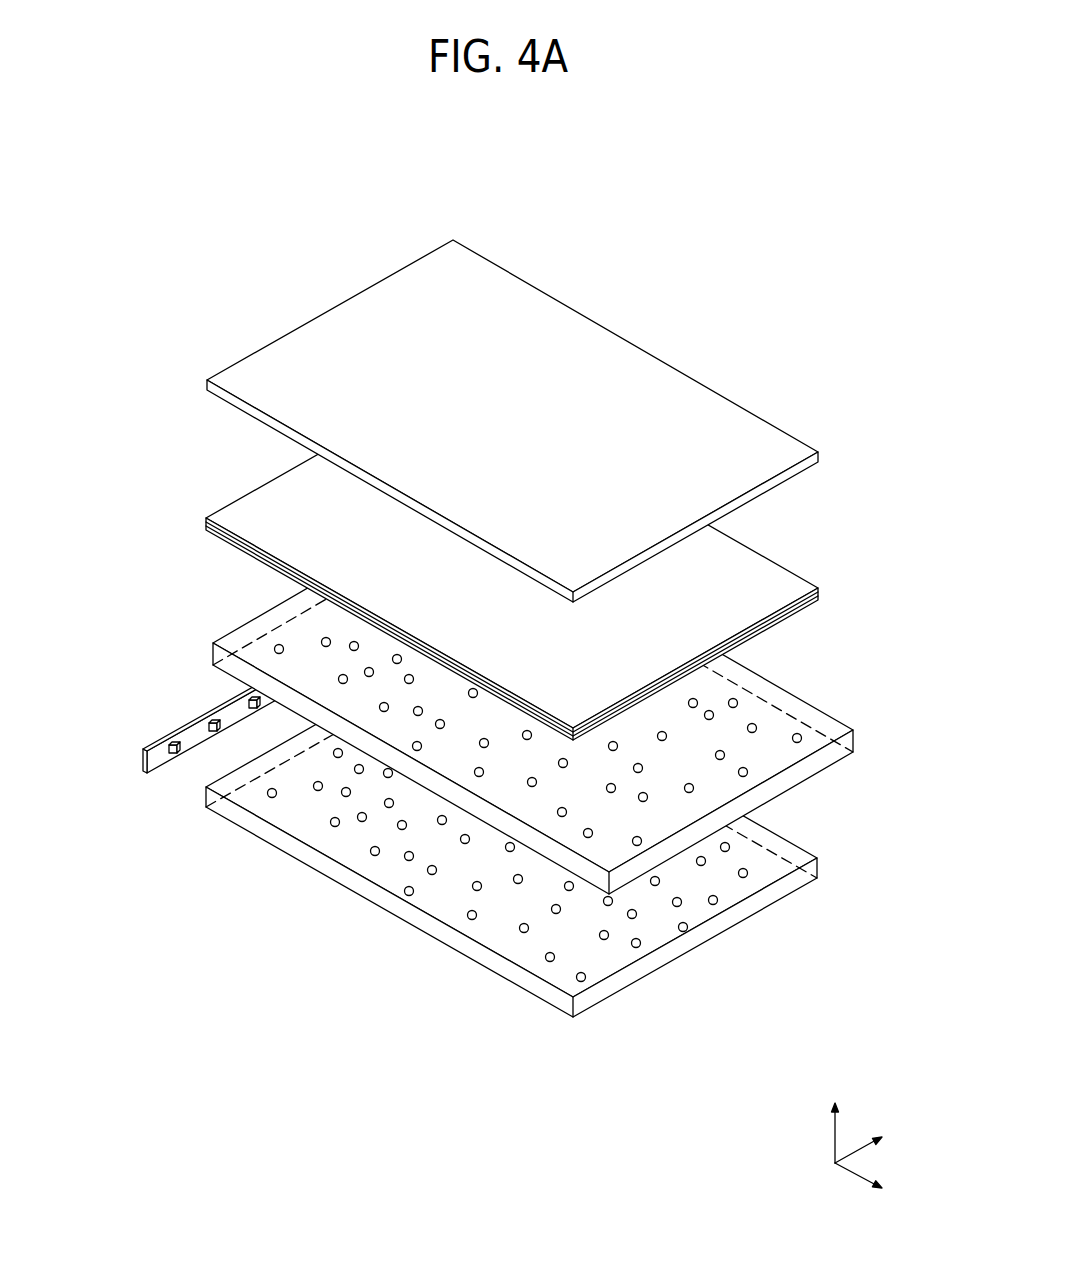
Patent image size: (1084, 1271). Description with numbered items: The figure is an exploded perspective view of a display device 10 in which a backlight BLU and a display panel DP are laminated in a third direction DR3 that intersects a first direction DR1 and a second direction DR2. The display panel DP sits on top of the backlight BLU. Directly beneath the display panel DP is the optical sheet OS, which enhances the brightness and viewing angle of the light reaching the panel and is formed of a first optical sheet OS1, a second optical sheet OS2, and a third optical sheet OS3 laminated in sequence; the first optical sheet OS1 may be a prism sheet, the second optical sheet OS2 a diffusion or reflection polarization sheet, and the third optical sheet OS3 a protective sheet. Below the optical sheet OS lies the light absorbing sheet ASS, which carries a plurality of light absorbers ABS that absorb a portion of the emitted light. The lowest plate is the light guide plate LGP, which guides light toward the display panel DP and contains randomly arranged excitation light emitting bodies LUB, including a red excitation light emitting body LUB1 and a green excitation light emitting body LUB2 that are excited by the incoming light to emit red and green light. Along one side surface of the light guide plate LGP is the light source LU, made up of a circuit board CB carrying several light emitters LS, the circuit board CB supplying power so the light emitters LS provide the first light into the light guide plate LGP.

The display device 10 is at (502, 634).
The display panel DP is at (820, 453).
The backlight BLU is at (502, 716).
The light source LU is at (198, 687).
The light emitter LS is at (176, 737).
The circuit board CB is at (194, 738).
The optical sheet OS is at (576, 559).
The first optical sheet OS1 is at (822, 598).
The second optical sheet OS2 is at (821, 593).
The third optical sheet OS3 is at (820, 589).
The light absorbing sheet ASS is at (587, 697).
The light absorber ABS is at (733, 698).
The light guide plate LGP is at (583, 851).
The excitation light emitting bodies LUB is at (746, 976).
The red excitation light emitting body LUB1 is at (684, 932).
The green excitation light emitting body LUB2 is at (714, 905).
The first direction DR1 is at (879, 1183).
The second direction DR2 is at (879, 1143).
The third direction DR3 is at (835, 1119).